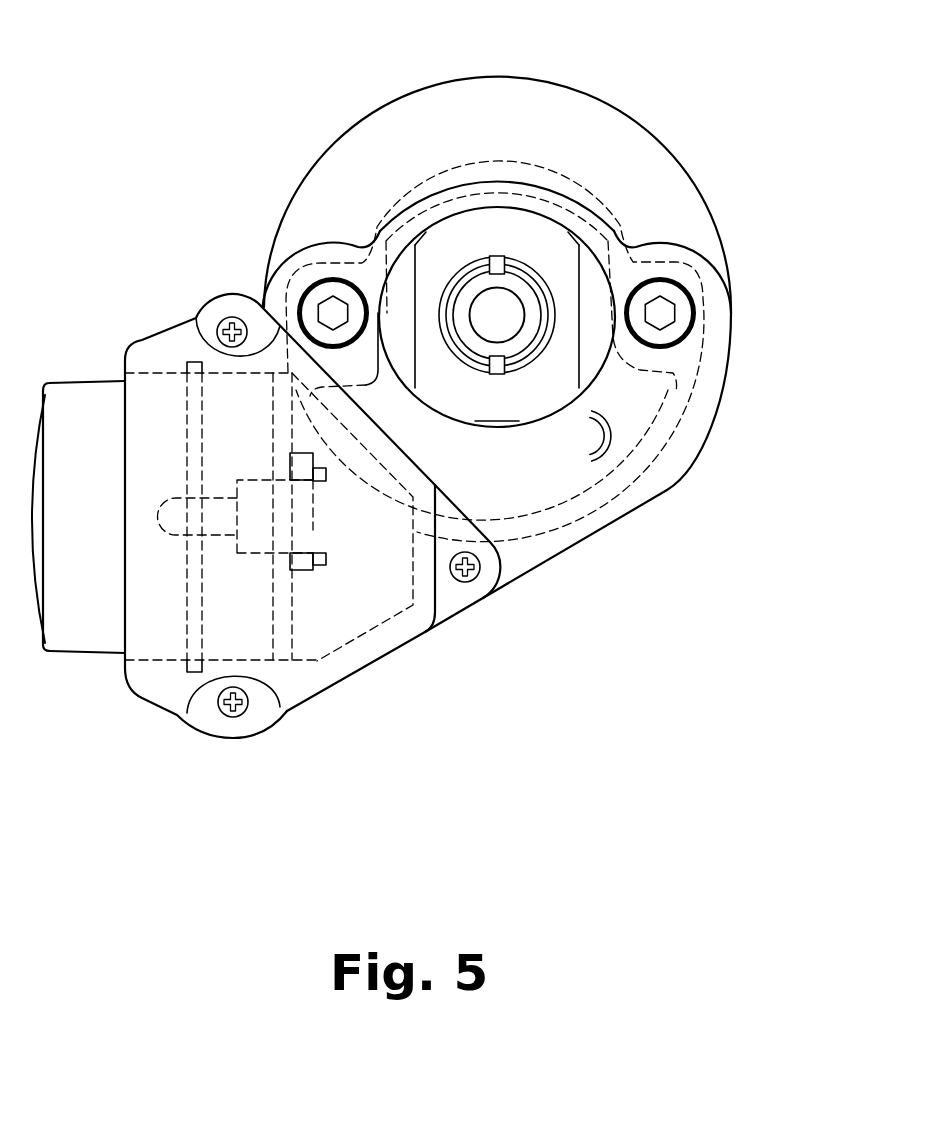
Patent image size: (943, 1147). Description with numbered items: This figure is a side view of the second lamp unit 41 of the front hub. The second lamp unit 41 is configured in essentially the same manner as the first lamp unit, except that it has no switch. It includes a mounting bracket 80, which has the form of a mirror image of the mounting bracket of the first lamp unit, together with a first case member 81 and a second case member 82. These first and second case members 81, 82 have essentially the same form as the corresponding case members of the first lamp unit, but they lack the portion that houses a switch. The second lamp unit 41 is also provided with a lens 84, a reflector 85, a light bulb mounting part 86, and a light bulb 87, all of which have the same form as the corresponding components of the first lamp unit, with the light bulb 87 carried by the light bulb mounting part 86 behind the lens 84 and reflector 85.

The second lamp unit 41 is at (645, 102).
The mounting bracket 80 is at (620, 222).
The first case member 81 is at (702, 237).
The second case member 82 is at (373, 652).
The lens 84 is at (73, 642).
The reflector 85 is at (294, 625).
The light bulb mounting part 86 is at (330, 538).
The light bulb 87 is at (220, 537).